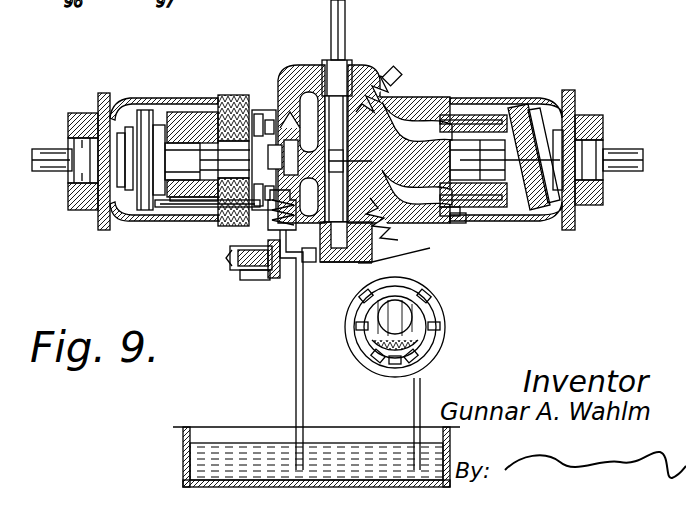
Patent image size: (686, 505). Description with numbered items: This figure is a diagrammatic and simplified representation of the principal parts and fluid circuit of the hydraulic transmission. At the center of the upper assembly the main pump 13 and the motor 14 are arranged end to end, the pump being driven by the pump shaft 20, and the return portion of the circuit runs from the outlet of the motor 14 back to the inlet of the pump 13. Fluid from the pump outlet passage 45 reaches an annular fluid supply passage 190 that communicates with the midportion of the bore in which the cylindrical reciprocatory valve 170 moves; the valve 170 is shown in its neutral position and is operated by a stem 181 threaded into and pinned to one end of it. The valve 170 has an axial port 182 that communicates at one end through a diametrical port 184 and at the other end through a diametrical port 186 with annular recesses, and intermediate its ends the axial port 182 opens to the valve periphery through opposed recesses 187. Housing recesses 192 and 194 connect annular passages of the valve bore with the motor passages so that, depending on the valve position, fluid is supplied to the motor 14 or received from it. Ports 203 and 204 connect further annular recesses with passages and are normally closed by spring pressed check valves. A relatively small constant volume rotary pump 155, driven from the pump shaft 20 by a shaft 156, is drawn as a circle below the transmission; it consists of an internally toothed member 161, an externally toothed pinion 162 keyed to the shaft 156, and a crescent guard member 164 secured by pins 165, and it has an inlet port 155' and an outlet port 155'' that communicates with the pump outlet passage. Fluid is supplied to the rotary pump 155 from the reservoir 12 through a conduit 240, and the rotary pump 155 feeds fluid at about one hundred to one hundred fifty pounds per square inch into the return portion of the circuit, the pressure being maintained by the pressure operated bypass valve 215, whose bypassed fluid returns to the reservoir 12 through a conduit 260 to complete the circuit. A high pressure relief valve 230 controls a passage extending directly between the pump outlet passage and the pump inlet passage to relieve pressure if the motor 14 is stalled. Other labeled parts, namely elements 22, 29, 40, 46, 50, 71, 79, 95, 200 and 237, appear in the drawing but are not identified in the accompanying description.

The reservoir 12 is at (190, 467).
The pump 13 is at (133, 94).
The motor 14 is at (500, 96).
The pump shaft 20 is at (47, 162).
The output shaft 22 is at (636, 162).
The pump cylinder barrel 29 is at (186, 199).
The valve plate 40 is at (258, 109).
The pump outlet passage 45 is at (287, 128).
The central body 46 is at (268, 122).
The pump disc 50 is at (155, 138).
The piston rod 71 is at (462, 121).
The motor block 79 is at (452, 236).
The swash plate 95 is at (522, 148).
The rotary pump 155 is at (431, 327).
The inlet port 155' is at (439, 300).
The outlet port 155'' is at (380, 320).
The shaft 156 is at (402, 320).
The internally toothed member 161 is at (446, 333).
The externally toothed pinion 162 is at (420, 338).
The crescent guard member 164 is at (388, 360).
The pins 165 is at (408, 378).
The valve 170 is at (340, 270).
The stem 181 is at (346, 22).
The axial port 182 is at (383, 216).
The diametrical port 184 is at (352, 250).
The diametrical port 186 is at (362, 88).
The opposed recesses 187 is at (366, 160).
The annular fluid supply passage 190 is at (318, 263).
The recess 192 is at (452, 216).
The recess 194 is at (432, 98).
The passage 200 is at (372, 263).
The port 203 is at (417, 259).
The port 204 is at (405, 98).
The pressure operated bypass valve 215 is at (247, 272).
The high pressure relief valve 230 is at (240, 208).
The bearing 237 is at (282, 157).
The conduit 240 is at (421, 383).
The conduit 260 is at (296, 350).